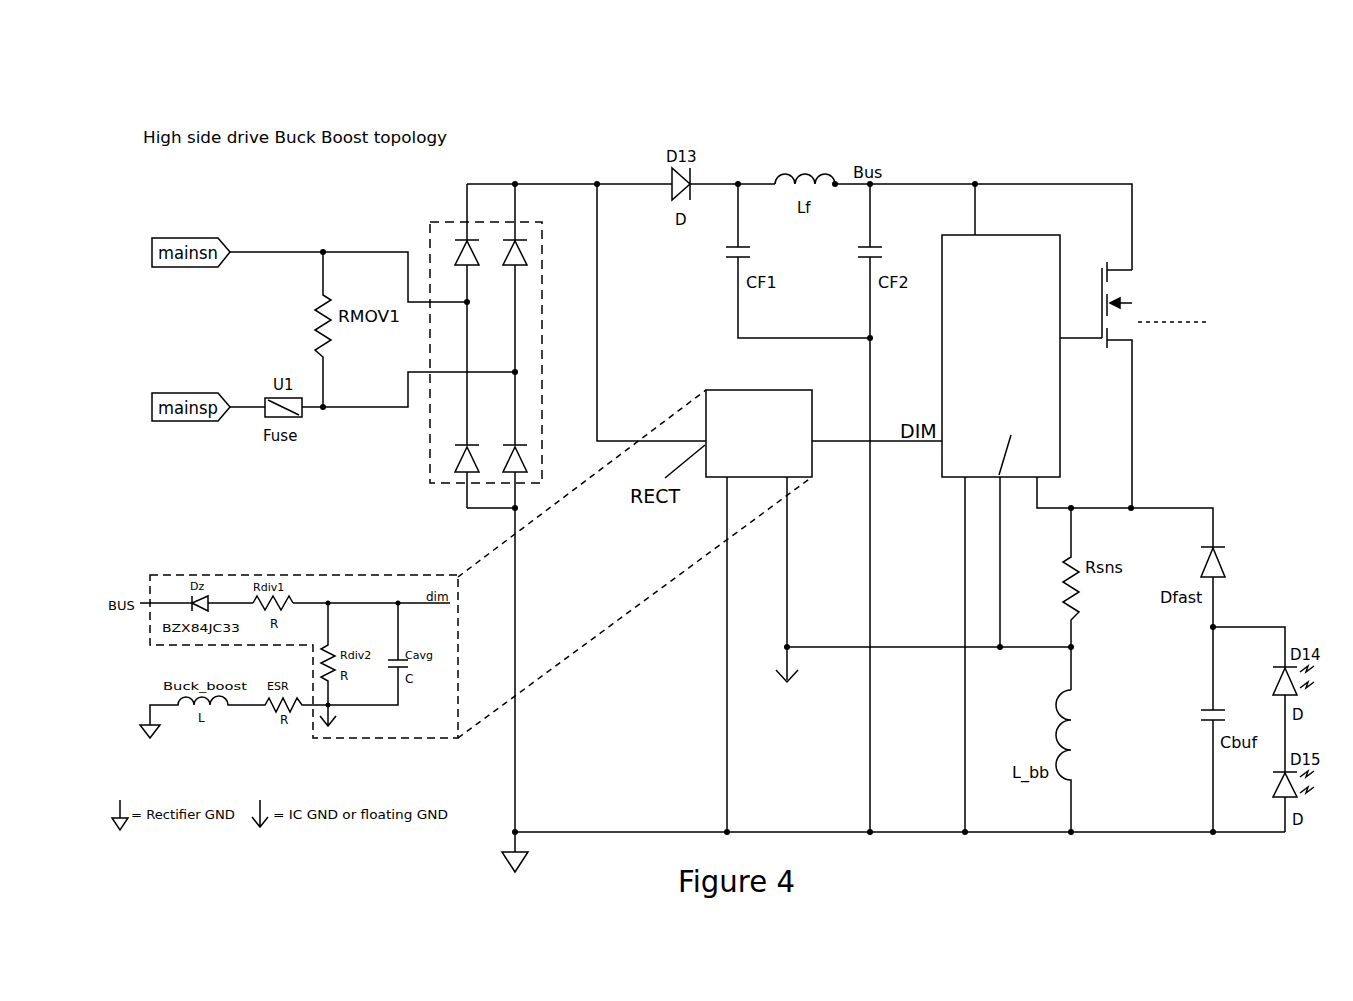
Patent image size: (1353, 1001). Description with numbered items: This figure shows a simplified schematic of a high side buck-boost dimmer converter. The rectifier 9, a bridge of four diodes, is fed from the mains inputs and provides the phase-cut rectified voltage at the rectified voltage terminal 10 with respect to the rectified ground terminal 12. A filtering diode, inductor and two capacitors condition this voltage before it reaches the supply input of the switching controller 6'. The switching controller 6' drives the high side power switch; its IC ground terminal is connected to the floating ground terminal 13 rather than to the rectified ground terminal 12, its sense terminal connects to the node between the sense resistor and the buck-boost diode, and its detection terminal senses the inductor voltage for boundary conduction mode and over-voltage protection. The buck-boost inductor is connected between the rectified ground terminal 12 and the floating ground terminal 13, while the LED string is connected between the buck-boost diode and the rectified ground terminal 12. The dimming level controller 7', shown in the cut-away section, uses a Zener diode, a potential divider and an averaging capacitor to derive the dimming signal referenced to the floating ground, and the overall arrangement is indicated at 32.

The rectifier 9 is at (428, 222).
The rectified voltage terminal 10 is at (518, 184).
The rectified ground terminal 12 is at (513, 511).
The floating ground terminal 13 is at (789, 682).
The high side switch M1 32 is at (1203, 240).
The switching controller 6' is at (1001, 358).
The dimming level controller 7' is at (759, 434).